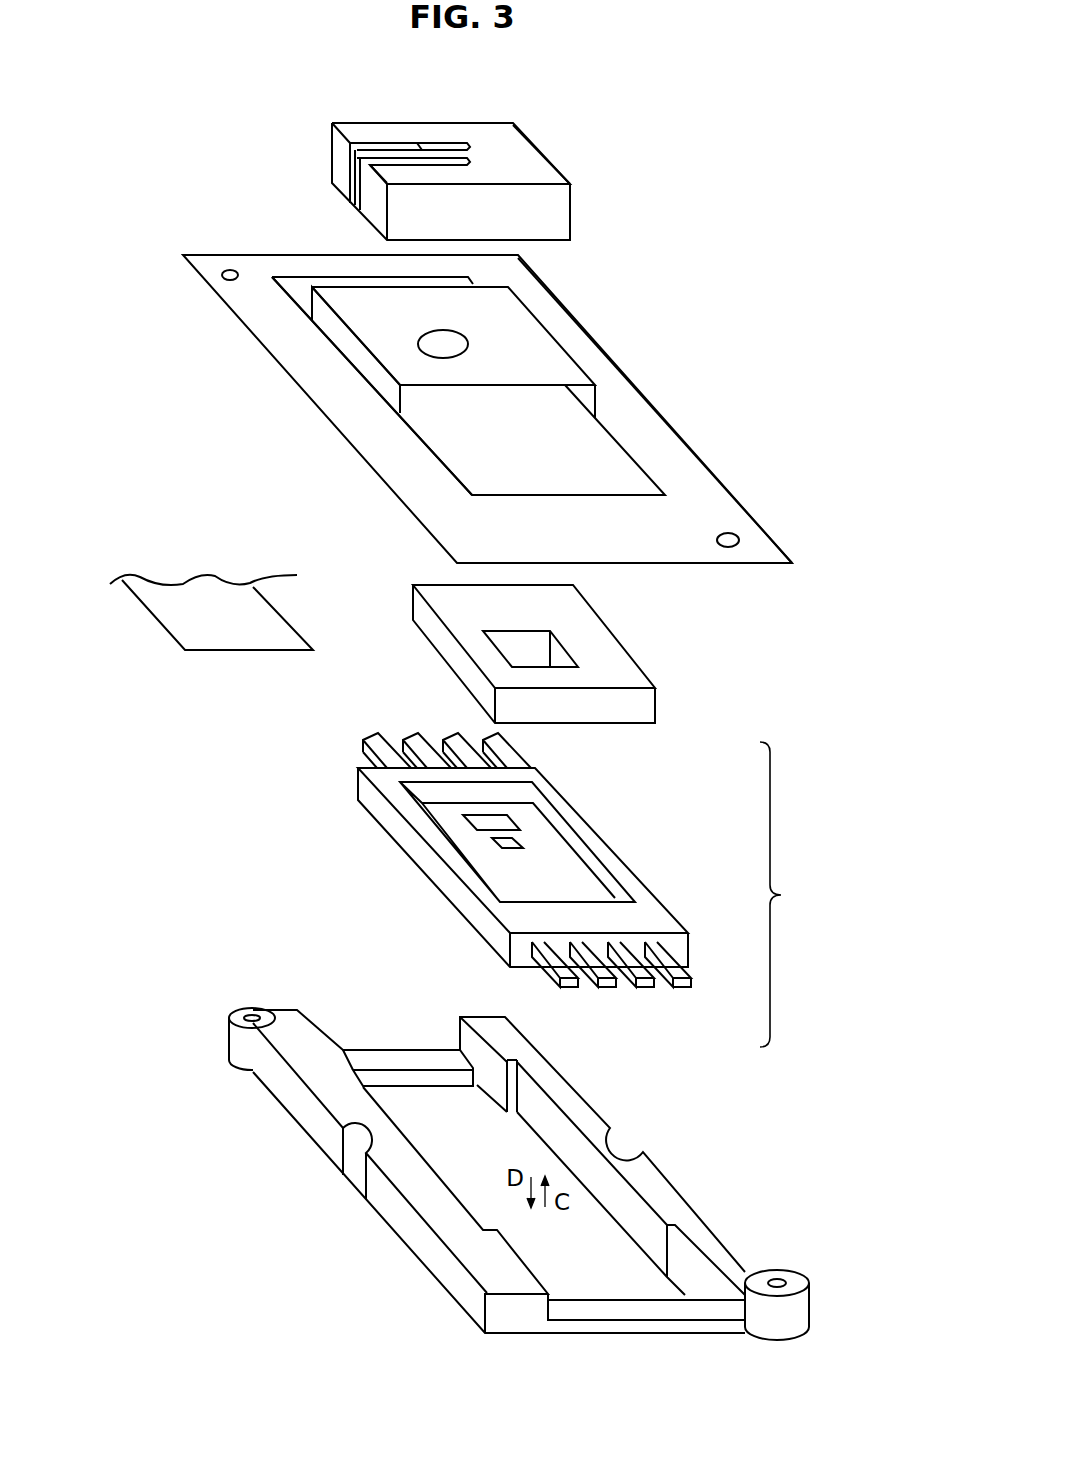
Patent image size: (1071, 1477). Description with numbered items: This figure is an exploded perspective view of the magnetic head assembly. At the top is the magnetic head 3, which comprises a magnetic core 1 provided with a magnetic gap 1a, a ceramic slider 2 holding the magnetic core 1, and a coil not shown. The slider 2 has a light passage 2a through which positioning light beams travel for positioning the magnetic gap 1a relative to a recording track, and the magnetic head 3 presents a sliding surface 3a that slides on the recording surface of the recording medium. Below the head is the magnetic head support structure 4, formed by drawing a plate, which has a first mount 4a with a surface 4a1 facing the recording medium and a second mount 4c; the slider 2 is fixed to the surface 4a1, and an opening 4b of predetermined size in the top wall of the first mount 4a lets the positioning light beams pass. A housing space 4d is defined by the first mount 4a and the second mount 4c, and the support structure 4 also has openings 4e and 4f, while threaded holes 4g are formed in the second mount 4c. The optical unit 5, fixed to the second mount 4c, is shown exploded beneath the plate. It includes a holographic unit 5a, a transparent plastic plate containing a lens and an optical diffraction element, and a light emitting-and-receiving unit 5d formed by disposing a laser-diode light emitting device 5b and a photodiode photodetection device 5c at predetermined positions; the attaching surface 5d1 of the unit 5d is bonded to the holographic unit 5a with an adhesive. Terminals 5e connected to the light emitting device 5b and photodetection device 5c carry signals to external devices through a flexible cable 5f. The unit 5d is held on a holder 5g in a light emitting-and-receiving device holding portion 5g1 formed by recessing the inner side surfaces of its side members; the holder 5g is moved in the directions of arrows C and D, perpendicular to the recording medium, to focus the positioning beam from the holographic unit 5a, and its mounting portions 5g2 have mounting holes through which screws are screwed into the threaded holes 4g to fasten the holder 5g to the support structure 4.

The magnetic core 1 is at (458, 140).
The magnetic gap 1a is at (422, 142).
The slider 2 is at (563, 168).
The light passage 2a is at (363, 187).
The magnetic head 3 is at (510, 138).
The sliding surface 3a is at (528, 157).
The magnetic head support structure 4 is at (643, 418).
The first mount 4a is at (525, 332).
The surface 4a1 is at (572, 372).
The opening 4b is at (427, 347).
The second mount 4c is at (693, 472).
The housing space 4d is at (407, 403).
The opening 4e is at (465, 472).
The opening 4f is at (290, 288).
The threaded holes 4g is at (228, 270).
The optical unit 5 is at (788, 910).
The holographic unit 5a is at (590, 620).
The light emitting device 5b is at (520, 838).
The photodetection device 5c is at (513, 818).
The light emitting-and-receiving unit 5d is at (653, 915).
The attaching surface 5d1 is at (597, 860).
The terminals 5e is at (375, 732).
The flexible cable 5f is at (283, 618).
The holder 5g is at (672, 1170).
The light emitting-and-receiving device holding portion 5g1 is at (530, 1085).
The mounting portions 5g2 is at (253, 1014).